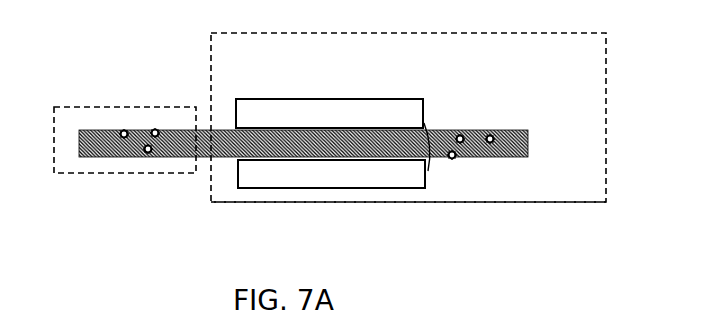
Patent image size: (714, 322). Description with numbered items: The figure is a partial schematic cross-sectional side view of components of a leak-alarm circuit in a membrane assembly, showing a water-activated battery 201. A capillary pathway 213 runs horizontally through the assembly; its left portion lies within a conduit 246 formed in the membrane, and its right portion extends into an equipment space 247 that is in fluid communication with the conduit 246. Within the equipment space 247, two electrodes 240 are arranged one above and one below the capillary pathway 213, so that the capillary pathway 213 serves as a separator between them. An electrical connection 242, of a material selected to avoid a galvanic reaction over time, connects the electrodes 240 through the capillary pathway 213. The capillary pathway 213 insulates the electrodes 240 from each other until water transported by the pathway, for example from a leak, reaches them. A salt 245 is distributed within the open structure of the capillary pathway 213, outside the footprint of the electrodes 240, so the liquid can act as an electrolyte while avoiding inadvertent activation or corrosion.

The water-activated battery 201 is at (259, 73).
The capillary pathway 213 is at (521, 139).
The electrodes 240 is at (348, 105).
The electrical connection 242 is at (429, 167).
The salt 245 is at (141, 150).
The conduit 246 is at (140, 105).
The equipment space 247 is at (414, 203).